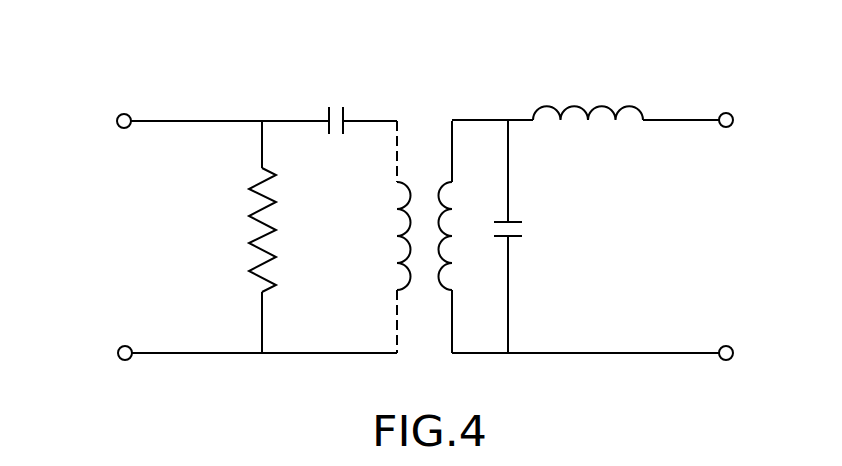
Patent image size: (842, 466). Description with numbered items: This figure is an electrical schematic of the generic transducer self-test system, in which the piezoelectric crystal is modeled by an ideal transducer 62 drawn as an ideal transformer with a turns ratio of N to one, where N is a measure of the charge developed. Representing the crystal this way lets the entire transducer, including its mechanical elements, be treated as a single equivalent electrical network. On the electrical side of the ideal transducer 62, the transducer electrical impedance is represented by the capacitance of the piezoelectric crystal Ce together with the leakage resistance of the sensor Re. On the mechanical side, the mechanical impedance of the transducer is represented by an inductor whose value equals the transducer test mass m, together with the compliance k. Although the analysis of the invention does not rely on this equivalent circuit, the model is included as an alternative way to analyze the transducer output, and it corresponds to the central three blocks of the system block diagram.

The ideal transducer 62 is at (112, 94).
The leakage resistance Re is at (241, 237).
The capacitance of the piezoelectric crystal Ce is at (337, 141).
The compliance k is at (518, 236).
The transducer test mass m is at (588, 128).